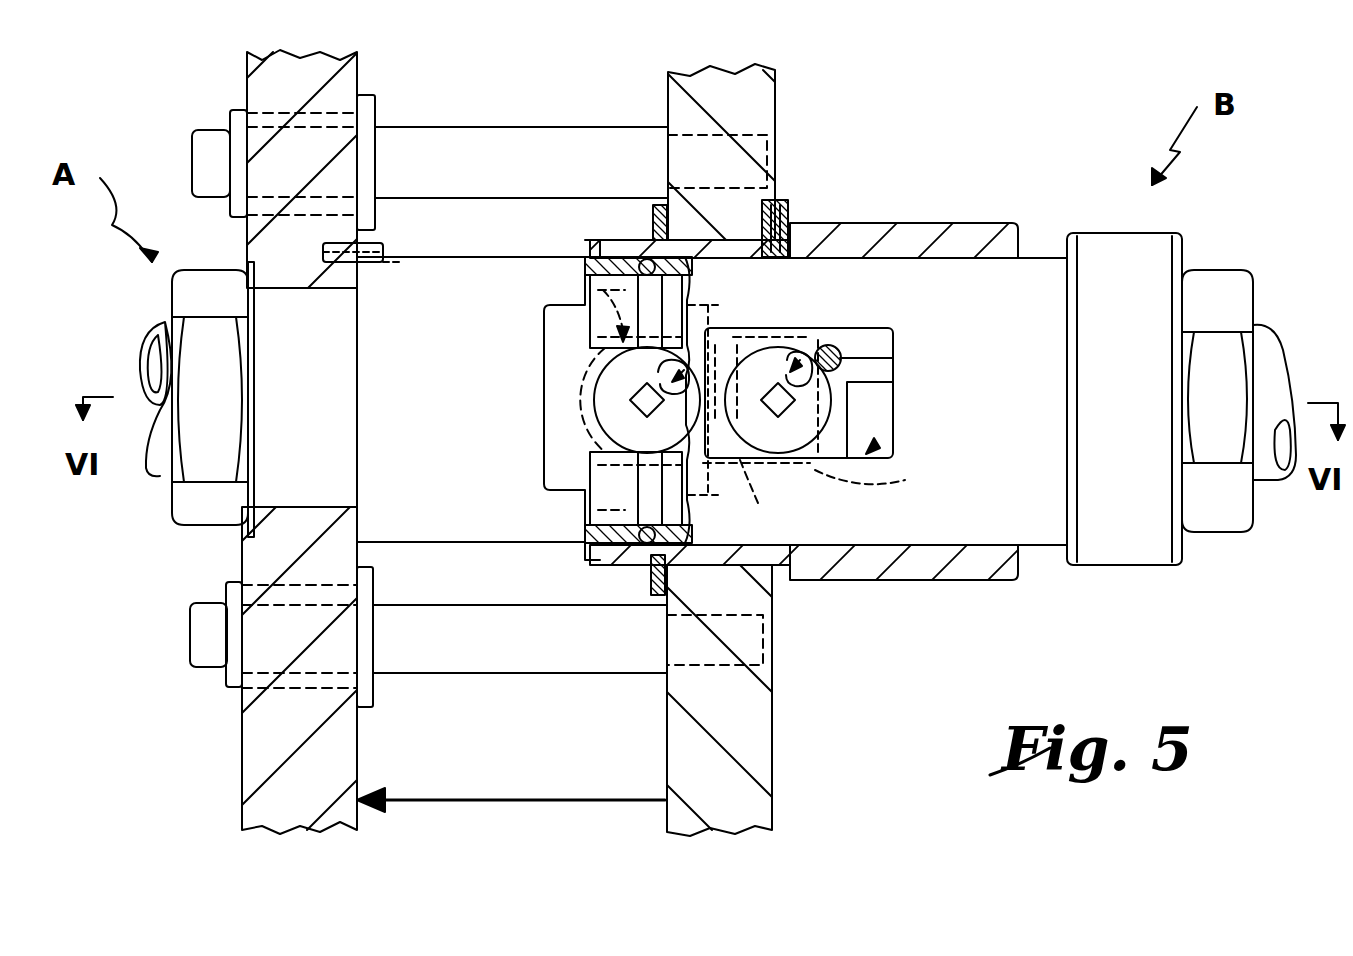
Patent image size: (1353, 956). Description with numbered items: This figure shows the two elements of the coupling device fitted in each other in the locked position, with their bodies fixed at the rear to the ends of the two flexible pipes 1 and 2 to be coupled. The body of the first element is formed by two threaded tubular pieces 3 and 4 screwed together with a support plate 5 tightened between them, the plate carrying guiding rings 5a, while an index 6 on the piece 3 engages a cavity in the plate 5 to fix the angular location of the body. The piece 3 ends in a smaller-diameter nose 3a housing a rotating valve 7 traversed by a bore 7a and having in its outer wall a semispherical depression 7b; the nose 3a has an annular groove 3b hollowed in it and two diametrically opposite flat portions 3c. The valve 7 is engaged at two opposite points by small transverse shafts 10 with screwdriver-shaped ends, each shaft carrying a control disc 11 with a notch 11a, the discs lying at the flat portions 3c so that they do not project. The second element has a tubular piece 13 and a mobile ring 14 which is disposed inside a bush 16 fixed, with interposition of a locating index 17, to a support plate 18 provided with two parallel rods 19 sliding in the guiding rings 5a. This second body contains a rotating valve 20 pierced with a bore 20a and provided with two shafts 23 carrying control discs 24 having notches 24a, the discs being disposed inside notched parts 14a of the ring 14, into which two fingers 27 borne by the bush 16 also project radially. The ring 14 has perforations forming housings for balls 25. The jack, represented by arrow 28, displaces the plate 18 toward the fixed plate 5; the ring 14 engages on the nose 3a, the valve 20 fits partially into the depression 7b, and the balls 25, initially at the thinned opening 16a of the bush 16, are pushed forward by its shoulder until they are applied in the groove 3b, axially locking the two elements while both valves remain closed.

The flexible pipe 1 is at (142, 330).
The flexible pipe 2 is at (1280, 350).
The tubular piece 3 is at (406, 523).
The nose 3a is at (690, 300).
The annular groove 3b is at (640, 503).
The flat portion 3c is at (563, 448).
The tubular piece 4 is at (195, 520).
The support plate 5 is at (265, 742).
The guiding ring 5a is at (210, 135).
The index 6 is at (338, 270).
The rotating valve 7 is at (575, 407).
The bore 7a is at (585, 292).
The depression 7b is at (777, 496).
The transverse shaft 10 is at (638, 400).
The control disc 11 is at (668, 376).
The notch 11a is at (686, 362).
The tubular piece 13 is at (1222, 530).
The mobile ring 14 is at (990, 545).
The notched part 14a is at (870, 450).
The bush 16 is at (880, 565).
The thinned opening 16a is at (583, 551).
The index 17 is at (795, 215).
The support plate 18 is at (755, 722).
The parallel rod 19 is at (430, 185).
The rotating valve 20 is at (850, 403).
The bore 20a is at (905, 480).
The shaft 23 is at (780, 417).
The control disc 24 is at (895, 380).
The notch 24a is at (790, 348).
The ball 25 is at (648, 262).
The finger 27 is at (893, 358).
The jack 28 is at (550, 790).